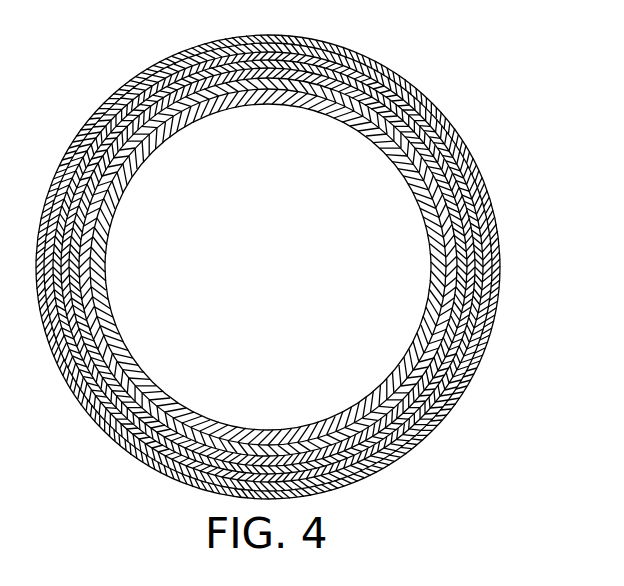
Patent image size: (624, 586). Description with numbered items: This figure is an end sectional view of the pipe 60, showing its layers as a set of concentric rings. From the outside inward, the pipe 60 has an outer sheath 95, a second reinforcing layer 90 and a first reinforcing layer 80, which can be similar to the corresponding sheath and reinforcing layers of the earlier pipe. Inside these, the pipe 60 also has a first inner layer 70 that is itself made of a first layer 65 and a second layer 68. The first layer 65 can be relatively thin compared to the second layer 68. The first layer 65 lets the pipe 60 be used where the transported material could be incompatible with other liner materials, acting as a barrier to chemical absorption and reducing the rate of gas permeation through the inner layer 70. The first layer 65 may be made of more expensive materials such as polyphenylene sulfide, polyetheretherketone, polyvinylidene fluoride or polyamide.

The pipe 60 is at (285, 270).
The first layer 65 is at (440, 247).
The second layer 68 is at (437, 188).
The first inner layer 70 is at (442, 128).
The first reinforcing layer 80 is at (455, 317).
The second reinforcing layer 90 is at (455, 353).
The outer sheath 95 is at (445, 412).